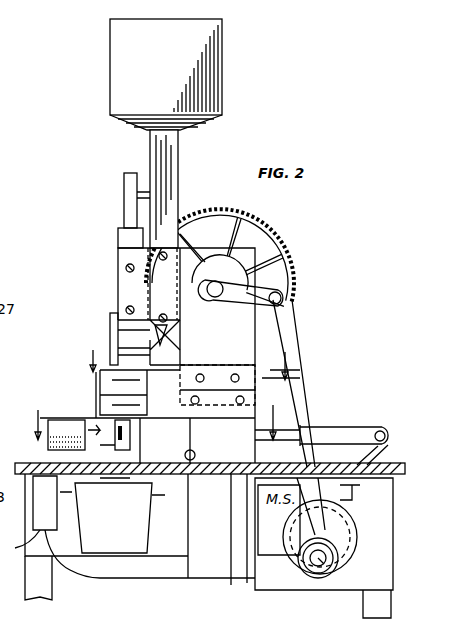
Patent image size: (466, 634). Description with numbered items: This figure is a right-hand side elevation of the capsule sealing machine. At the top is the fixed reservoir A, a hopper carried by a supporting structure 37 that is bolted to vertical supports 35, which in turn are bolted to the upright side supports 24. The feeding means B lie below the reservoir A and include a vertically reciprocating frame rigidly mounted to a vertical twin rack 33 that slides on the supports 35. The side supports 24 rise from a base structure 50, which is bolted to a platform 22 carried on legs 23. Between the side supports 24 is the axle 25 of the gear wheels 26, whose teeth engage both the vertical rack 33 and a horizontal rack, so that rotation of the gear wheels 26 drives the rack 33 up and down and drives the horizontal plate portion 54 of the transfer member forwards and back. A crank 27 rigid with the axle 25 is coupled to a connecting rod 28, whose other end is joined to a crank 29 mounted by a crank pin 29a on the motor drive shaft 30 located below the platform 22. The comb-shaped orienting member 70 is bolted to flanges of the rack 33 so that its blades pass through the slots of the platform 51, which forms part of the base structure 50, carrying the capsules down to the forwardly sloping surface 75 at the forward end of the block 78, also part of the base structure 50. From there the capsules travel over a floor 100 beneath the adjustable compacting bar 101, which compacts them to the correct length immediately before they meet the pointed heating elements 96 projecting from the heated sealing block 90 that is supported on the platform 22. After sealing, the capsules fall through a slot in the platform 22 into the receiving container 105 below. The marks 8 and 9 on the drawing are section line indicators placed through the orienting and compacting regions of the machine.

The fixed reservoir A is at (120, 67).
The feeding means B is at (150, 195).
The supporting structure 37 is at (172, 166).
The vertical twin rack 33 is at (124, 218).
The vertical supports 35 is at (118, 242).
The upright side supports 24 is at (118, 279).
The orienting member 70 is at (110, 318).
The forwardly sloping surface 75 is at (110, 333).
The section line 8 is at (186, 361).
The gear wheels 26 is at (250, 238).
The axle 25 is at (214, 284).
The crank 27 is at (222, 306).
The connecting rod 28 is at (296, 388).
The section line 9 is at (149, 422).
The horizontal plate portion 54 is at (182, 385).
The platform 51 is at (139, 378).
The block 78 is at (128, 400).
The compacting bar 101 is at (96, 400).
The heating elements 96 is at (88, 425).
The heated sealing block 90 is at (66, 435).
The floor 100 is at (90, 440).
The base structure 50 is at (197, 440).
The platform 22 is at (28, 460).
The receiving container 105 is at (128, 522).
The legs 23 is at (36, 584).
The crank 29 is at (345, 530).
The motor drive shaft 30 is at (340, 544).
The crank pin 29a is at (330, 568).